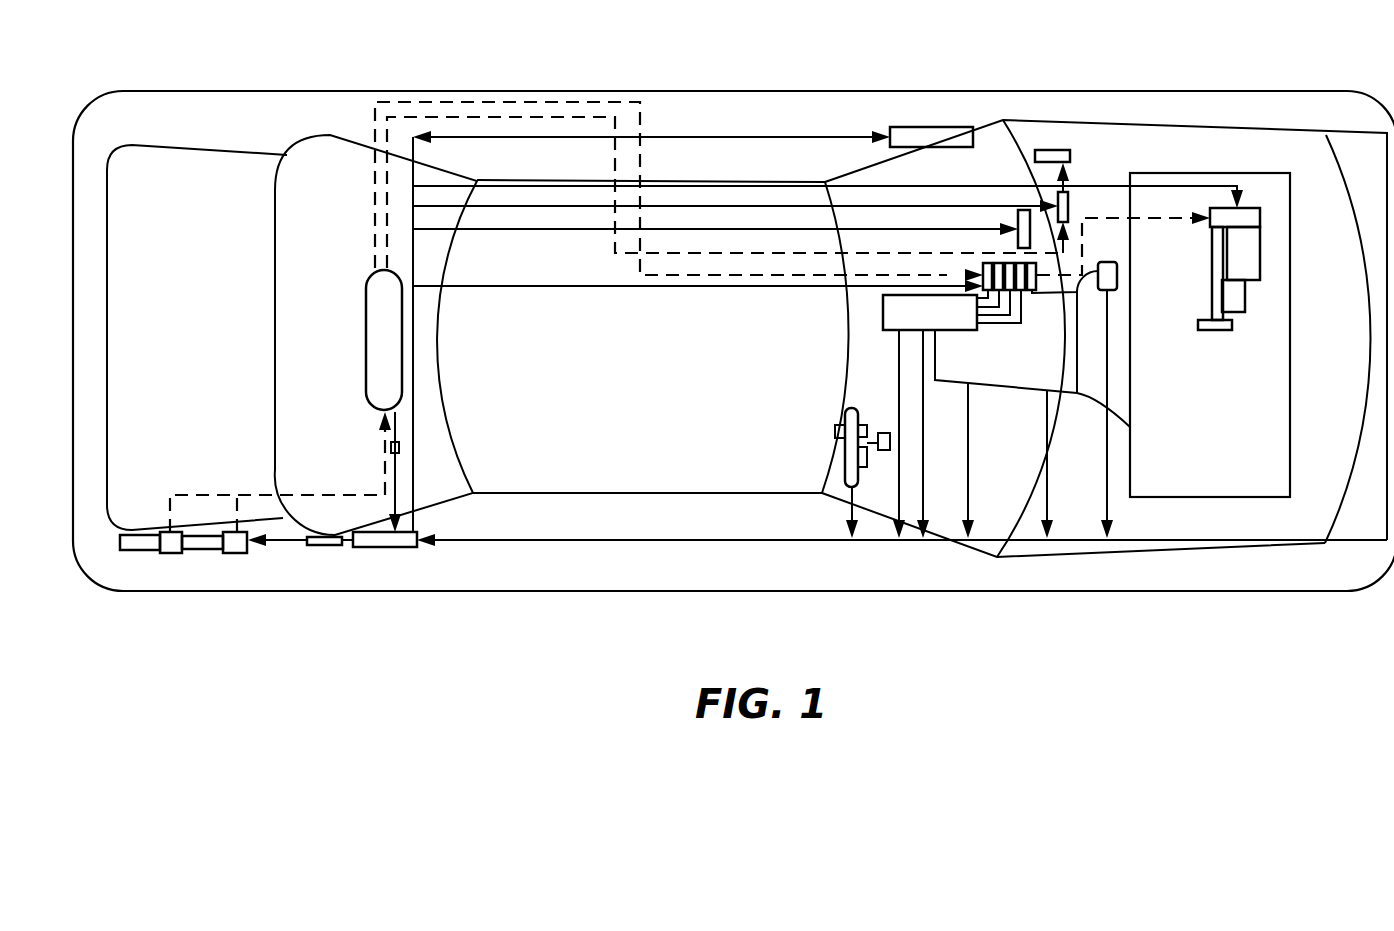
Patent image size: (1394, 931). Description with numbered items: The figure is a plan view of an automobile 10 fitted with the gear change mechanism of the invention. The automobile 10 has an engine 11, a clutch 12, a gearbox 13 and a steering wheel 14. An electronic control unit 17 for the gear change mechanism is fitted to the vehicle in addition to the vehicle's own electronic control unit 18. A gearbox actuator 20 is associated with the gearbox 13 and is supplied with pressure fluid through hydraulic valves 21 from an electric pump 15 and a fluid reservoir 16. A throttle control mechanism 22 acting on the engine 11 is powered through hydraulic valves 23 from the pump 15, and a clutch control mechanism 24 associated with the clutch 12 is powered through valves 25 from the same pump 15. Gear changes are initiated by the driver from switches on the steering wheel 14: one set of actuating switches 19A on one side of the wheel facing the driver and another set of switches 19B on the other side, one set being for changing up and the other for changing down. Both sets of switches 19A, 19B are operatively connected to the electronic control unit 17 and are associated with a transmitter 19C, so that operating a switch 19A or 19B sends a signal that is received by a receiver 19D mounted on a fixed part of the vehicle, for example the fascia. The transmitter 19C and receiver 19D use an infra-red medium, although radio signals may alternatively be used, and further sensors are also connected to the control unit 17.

The automobile 10 is at (1118, 598).
The engine 11 is at (1210, 335).
The clutch 12 is at (1092, 424).
The gearbox 13 is at (1002, 397).
The steering wheel 14 is at (842, 408).
The electric pump 15 is at (142, 540).
The fluid reservoir 16 is at (362, 298).
The electronic control unit 17 is at (381, 543).
The vehicle electronic control unit 18 is at (918, 135).
The actuating switches 19A is at (836, 432).
The actuating switches 19B is at (867, 452).
The transmitter 19C is at (865, 468).
The receiver 19D is at (880, 433).
The gearbox actuator 20 is at (866, 306).
The hydraulic valves 21 is at (975, 258).
The throttle control mechanism 22 is at (1270, 260).
The hydraulic valves 23 is at (1260, 222).
The clutch control mechanism 24 is at (1117, 273).
The valves 25 is at (1073, 205).